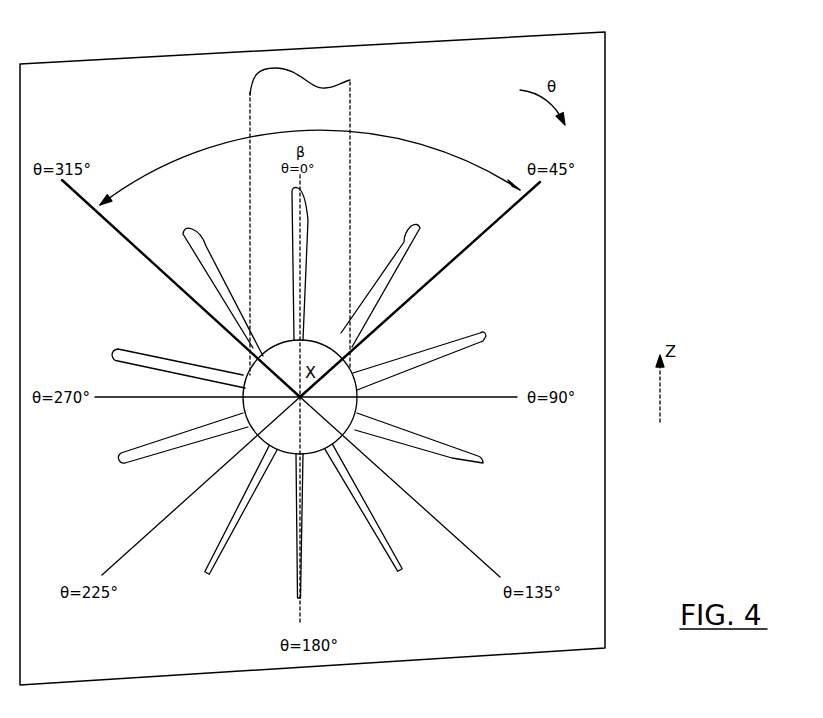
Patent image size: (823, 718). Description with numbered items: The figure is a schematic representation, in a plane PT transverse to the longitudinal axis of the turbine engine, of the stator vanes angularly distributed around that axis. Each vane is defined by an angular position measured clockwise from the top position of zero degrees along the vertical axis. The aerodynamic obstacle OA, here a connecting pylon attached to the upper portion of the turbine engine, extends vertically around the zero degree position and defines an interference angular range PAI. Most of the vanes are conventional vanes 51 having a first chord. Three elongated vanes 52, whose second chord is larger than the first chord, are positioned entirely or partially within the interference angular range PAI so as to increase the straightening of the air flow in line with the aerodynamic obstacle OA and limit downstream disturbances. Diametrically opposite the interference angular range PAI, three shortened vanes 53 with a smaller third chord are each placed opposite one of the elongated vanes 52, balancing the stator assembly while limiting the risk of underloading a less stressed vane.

The conventional vanes 51 is at (128, 347).
The elongated vanes 52 is at (292, 190).
The shortened vanes 53 is at (208, 573).
The transverse plane PT is at (603, 86).
The aerodynamic obstacle OA is at (250, 94).
The interference angular range PAI is at (387, 124).